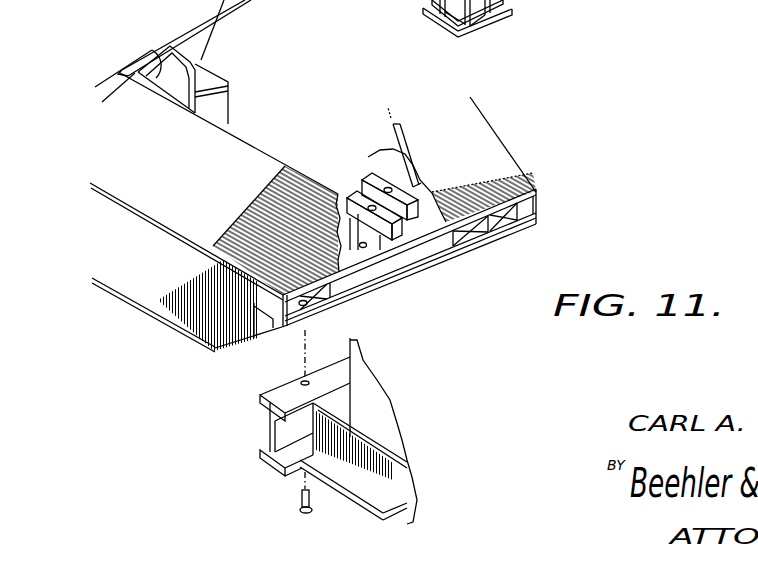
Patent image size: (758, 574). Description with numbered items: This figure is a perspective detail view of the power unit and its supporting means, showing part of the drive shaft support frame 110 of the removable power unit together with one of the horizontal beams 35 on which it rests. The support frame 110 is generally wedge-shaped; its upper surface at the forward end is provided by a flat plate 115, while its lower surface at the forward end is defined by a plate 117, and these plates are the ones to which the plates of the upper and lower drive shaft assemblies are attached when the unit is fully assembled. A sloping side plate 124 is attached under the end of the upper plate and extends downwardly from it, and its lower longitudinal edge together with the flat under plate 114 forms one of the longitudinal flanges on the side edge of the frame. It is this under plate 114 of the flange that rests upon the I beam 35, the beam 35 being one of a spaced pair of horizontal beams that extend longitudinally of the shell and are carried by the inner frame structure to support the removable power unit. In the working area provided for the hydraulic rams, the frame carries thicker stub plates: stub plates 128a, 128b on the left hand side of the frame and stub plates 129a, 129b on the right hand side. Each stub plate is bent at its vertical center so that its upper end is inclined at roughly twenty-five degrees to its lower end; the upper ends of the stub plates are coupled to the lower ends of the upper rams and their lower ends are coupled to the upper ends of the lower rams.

The drive shaft support frame 110 is at (514, 147).
The under plate 114 is at (455, 260).
The flat plate 115 is at (176, 166).
The plate 117 is at (123, 297).
The sloping side plate 124 is at (533, 181).
The stub plate 128a is at (347, 186).
The stub plate 128b is at (399, 156).
The stub plate 129a is at (148, 52).
The stub plate 129b is at (197, 68).
The horizontal beam 35 is at (270, 434).